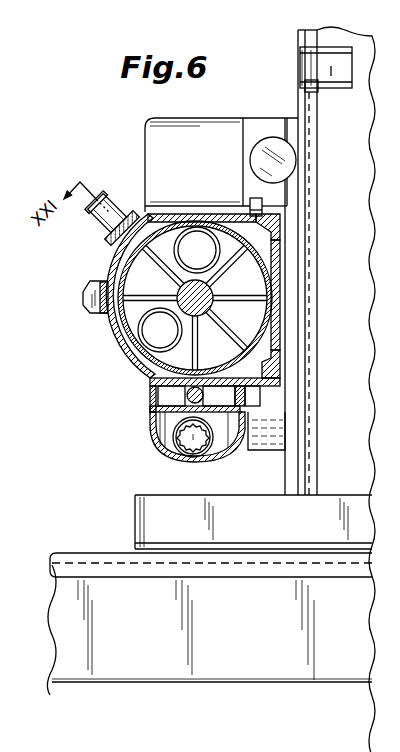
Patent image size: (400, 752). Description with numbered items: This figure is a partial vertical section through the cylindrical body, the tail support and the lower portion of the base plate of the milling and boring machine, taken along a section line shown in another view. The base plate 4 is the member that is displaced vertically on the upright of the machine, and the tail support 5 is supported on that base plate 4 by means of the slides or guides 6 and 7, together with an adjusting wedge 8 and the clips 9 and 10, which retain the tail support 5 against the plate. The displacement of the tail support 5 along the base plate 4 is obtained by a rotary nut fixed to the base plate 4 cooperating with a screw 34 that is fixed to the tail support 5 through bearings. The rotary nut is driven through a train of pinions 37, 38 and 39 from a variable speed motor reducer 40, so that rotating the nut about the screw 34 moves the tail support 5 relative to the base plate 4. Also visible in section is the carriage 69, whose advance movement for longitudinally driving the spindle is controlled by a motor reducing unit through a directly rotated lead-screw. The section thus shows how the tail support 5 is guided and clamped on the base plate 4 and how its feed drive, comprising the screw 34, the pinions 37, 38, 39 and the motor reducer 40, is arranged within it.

The base plate 4 is at (283, 283).
The tail support 5 is at (110, 271).
The slide 6 is at (280, 228).
The slide 7 is at (278, 382).
The adjusting wedge 8 is at (274, 352).
The clip 9 is at (252, 206).
The clip 10 is at (242, 398).
The screw 34 is at (186, 396).
The pinion 37 is at (178, 419).
The pinion 38 is at (215, 452).
The pinion 39 is at (180, 441).
The variable speed motor reducer 40 is at (172, 455).
The carriage 69 is at (178, 294).